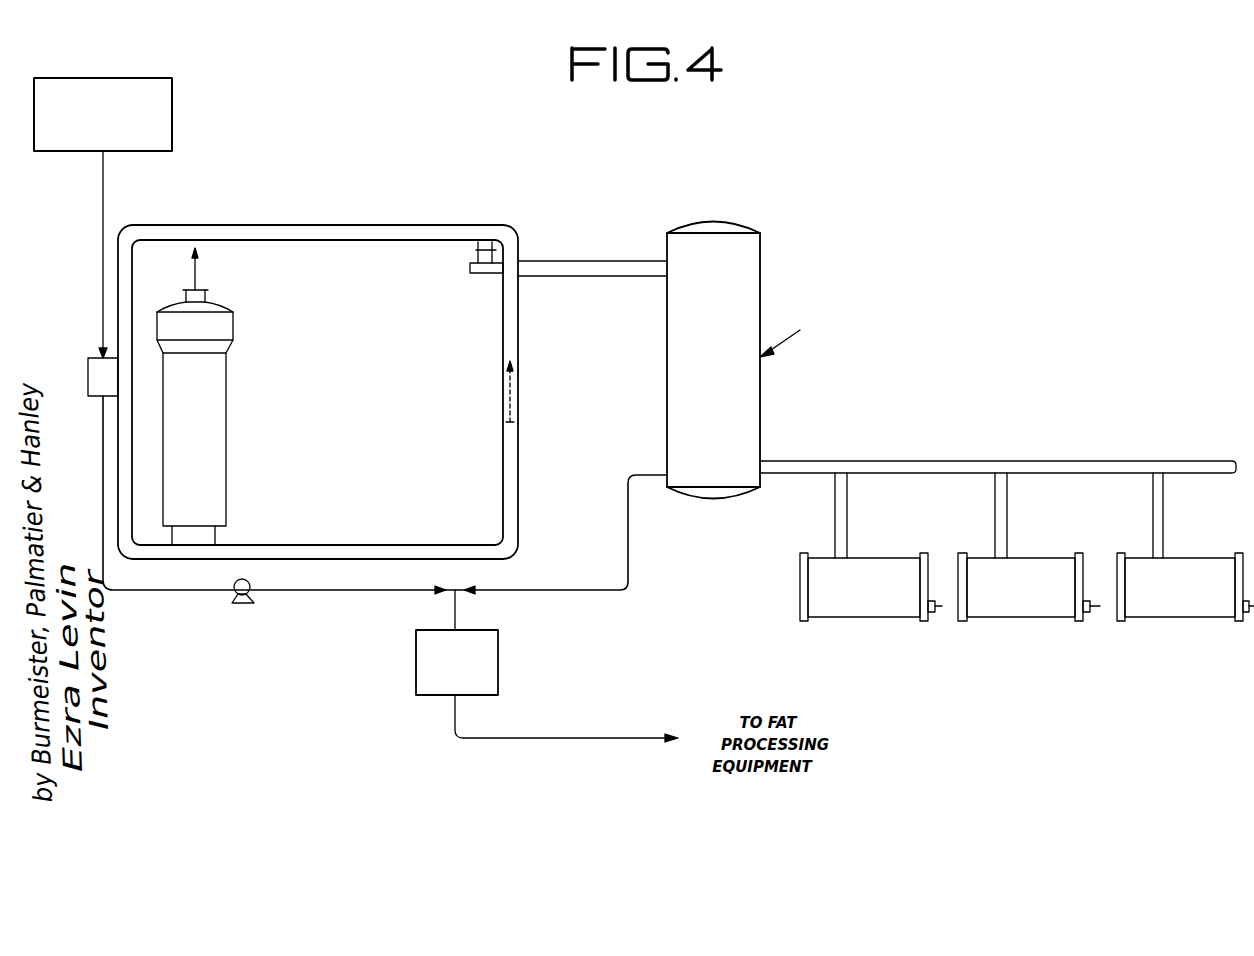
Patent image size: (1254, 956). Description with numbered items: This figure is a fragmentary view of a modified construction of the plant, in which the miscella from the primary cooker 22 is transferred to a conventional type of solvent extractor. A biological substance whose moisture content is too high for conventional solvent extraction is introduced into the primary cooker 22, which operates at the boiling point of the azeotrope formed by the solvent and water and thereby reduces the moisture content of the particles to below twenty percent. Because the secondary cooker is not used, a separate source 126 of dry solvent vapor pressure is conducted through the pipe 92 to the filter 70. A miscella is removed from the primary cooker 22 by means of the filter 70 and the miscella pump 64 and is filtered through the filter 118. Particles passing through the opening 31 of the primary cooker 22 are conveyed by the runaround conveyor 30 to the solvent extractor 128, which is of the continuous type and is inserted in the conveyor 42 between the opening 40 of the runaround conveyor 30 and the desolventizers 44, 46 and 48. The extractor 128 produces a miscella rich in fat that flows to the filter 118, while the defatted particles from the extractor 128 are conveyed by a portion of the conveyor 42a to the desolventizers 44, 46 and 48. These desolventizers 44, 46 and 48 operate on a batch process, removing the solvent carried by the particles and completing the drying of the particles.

The source of dry solvent vapor pressure 126 is at (165, 92).
The pipe 92 is at (103, 197).
The filter 70 is at (84, 355).
The runaround conveyor 30 is at (395, 200).
The primary cooker 22 is at (240, 427).
The opening 31 is at (200, 546).
The opening 40 is at (482, 246).
The conveyor 42 is at (600, 250).
The solvent extractor 128 is at (762, 252).
The conveyor portion 42a is at (822, 461).
The desolventizer 44 is at (890, 608).
The desolventizer 46 is at (1052, 610).
The desolventizer 48 is at (1203, 610).
The miscella pump 64 is at (250, 592).
The filter 118 is at (493, 642).